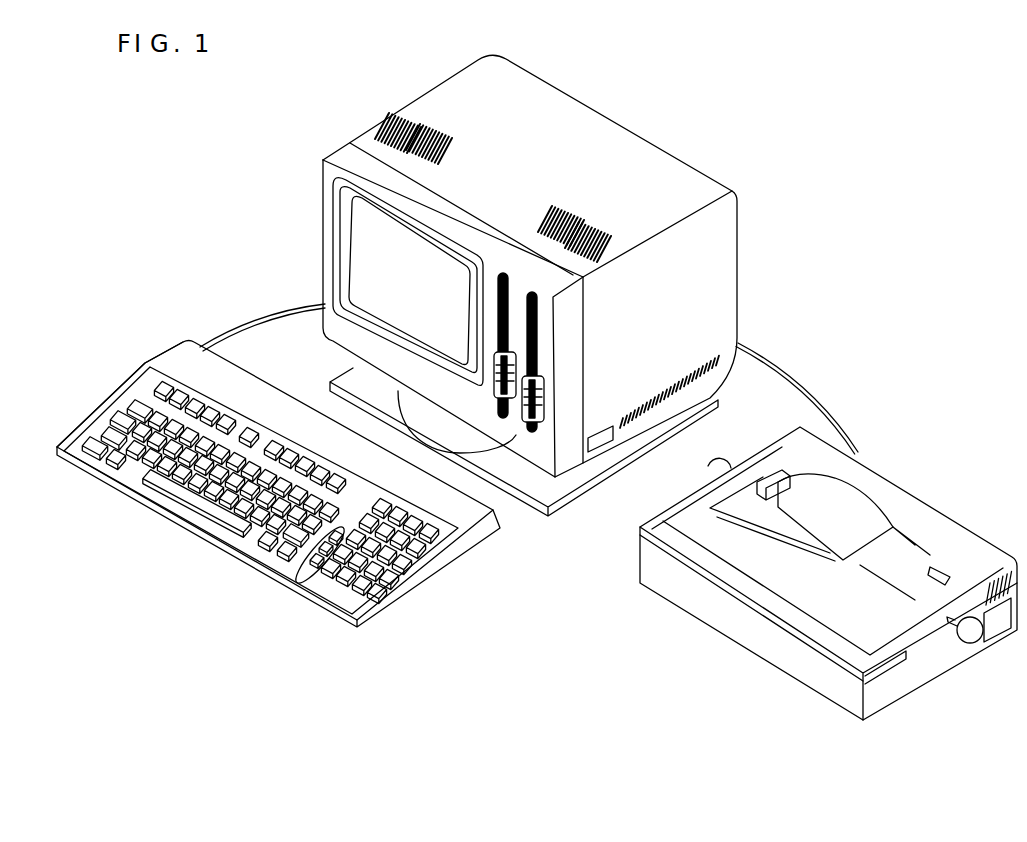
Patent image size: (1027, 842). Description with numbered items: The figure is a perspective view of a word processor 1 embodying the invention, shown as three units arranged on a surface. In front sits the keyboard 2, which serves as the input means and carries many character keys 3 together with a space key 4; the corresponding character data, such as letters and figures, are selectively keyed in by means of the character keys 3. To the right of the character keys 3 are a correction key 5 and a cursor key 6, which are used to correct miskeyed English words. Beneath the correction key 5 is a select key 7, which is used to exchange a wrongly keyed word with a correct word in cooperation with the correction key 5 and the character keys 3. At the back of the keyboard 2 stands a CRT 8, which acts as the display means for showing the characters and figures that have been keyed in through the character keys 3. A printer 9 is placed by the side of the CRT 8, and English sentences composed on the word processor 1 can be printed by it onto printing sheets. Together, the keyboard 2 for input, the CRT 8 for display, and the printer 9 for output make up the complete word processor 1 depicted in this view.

The word processor 1 is at (755, 241).
The keyboard 2 is at (267, 390).
The character keys 3 is at (58, 428).
The space key 4 is at (197, 504).
The correction key 5 is at (393, 567).
The cursor key 6 is at (303, 582).
The select key 7 is at (285, 552).
The CRT 8 is at (352, 256).
The printer 9 is at (665, 503).